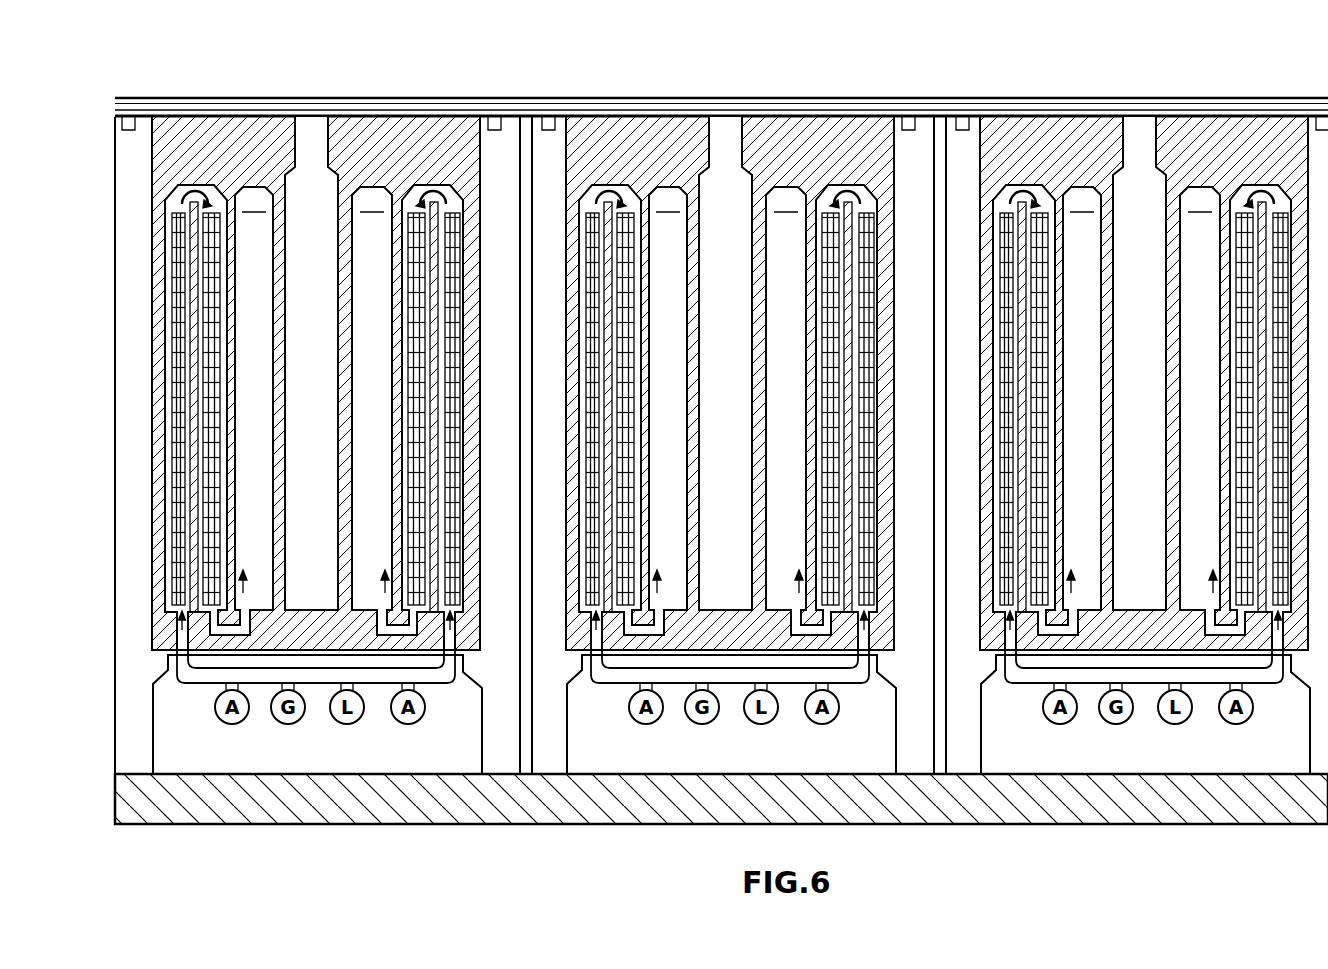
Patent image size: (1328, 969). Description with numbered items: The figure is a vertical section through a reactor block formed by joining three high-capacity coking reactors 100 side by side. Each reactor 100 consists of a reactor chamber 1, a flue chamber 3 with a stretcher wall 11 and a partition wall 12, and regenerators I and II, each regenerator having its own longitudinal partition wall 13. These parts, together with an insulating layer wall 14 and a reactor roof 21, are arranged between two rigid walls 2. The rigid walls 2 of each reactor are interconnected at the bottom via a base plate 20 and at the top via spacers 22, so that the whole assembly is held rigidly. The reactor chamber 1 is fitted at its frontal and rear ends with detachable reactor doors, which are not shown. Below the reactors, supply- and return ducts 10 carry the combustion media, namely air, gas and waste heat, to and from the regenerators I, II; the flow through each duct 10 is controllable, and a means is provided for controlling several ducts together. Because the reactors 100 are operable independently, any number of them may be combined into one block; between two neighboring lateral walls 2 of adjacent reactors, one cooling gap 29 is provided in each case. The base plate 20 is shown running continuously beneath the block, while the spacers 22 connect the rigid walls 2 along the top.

The high-capacity coking reactor 100 is at (625, 402).
The reactor chamber 1 is at (318, 226).
The rigid wall 2 is at (557, 252).
The flue chamber 3 is at (381, 276).
The supply- and return duct 10 is at (447, 688).
The stretcher wall 11 is at (350, 465).
The partition wall 12 is at (410, 560).
The longitudinal partition wall 13 is at (200, 490).
The insulating layer wall 14 is at (152, 555).
The base plate 20 is at (512, 808).
The reactor roof 21 is at (412, 130).
The spacer 22 is at (660, 98).
The cooling gap 29 is at (524, 130).
The regenerator I is at (178, 385).
The regenerator II is at (215, 325).